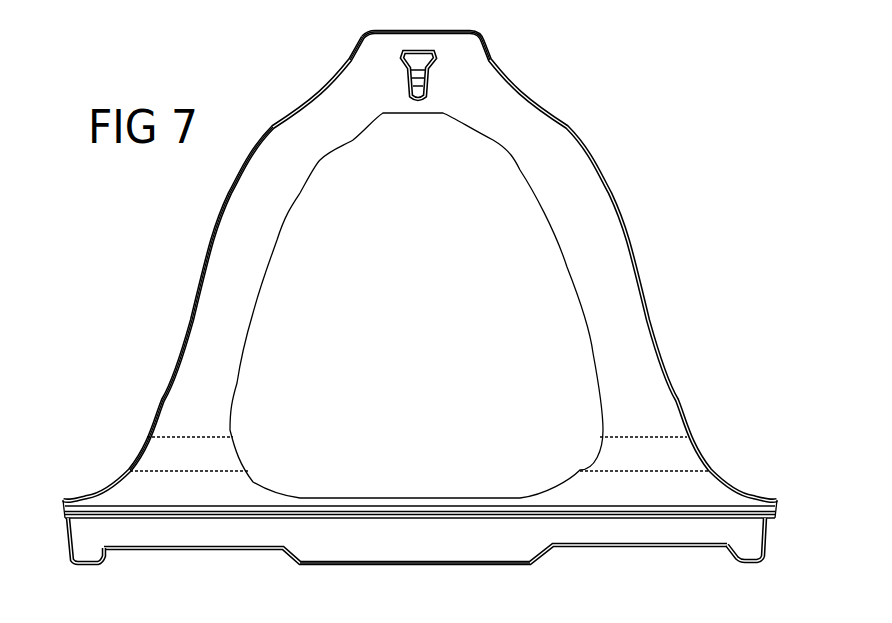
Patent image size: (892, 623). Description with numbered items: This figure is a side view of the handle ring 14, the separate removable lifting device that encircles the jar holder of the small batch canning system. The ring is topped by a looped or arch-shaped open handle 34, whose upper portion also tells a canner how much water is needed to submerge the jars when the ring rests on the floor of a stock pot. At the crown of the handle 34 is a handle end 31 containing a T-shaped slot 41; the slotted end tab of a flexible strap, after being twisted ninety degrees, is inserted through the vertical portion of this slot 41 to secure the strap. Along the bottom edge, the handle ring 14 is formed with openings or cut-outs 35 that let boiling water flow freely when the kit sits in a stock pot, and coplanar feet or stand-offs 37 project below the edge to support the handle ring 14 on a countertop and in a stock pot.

The handle ring 14 is at (656, 124).
The handle end 31 is at (310, 123).
The handle 34 is at (210, 310).
The T-shaped slot 41 is at (428, 87).
The cut-out 35 is at (200, 550).
The feet 37 is at (83, 544).